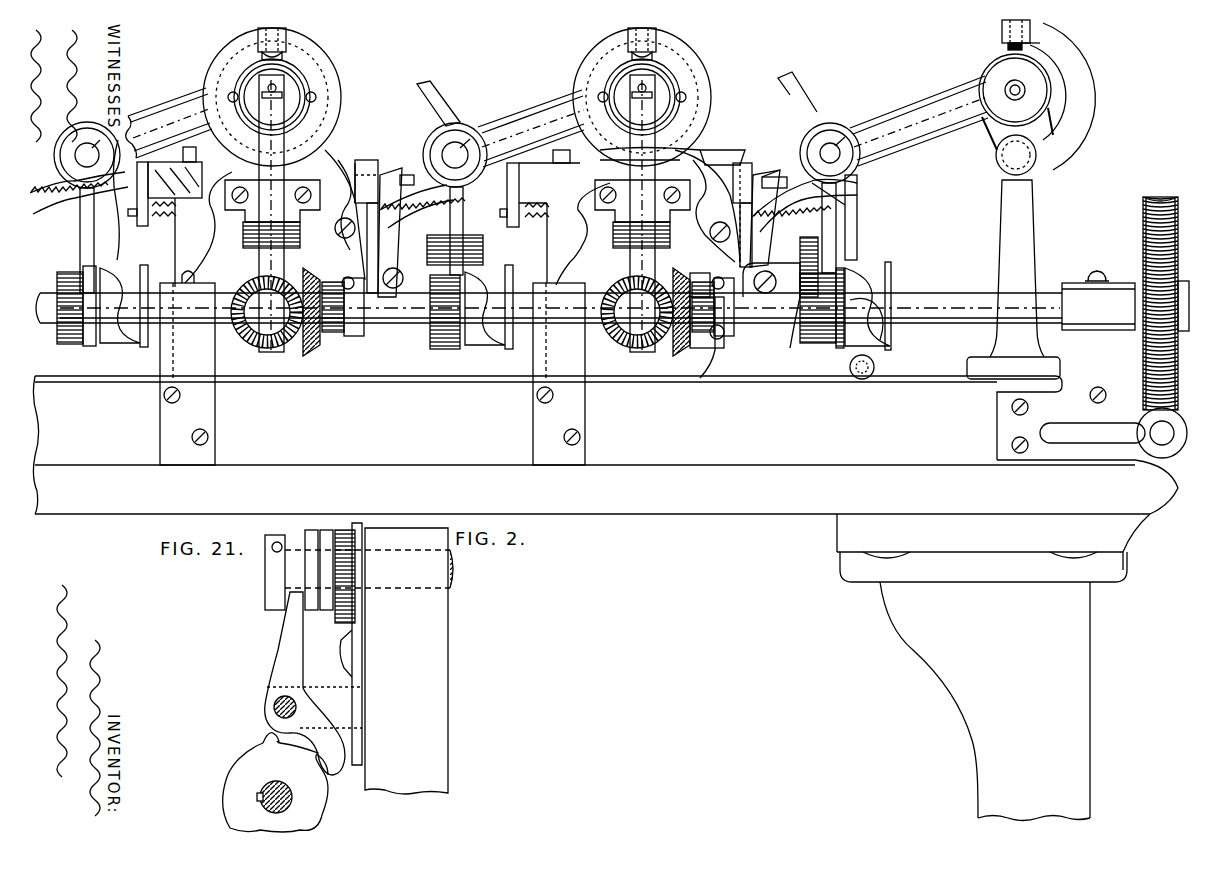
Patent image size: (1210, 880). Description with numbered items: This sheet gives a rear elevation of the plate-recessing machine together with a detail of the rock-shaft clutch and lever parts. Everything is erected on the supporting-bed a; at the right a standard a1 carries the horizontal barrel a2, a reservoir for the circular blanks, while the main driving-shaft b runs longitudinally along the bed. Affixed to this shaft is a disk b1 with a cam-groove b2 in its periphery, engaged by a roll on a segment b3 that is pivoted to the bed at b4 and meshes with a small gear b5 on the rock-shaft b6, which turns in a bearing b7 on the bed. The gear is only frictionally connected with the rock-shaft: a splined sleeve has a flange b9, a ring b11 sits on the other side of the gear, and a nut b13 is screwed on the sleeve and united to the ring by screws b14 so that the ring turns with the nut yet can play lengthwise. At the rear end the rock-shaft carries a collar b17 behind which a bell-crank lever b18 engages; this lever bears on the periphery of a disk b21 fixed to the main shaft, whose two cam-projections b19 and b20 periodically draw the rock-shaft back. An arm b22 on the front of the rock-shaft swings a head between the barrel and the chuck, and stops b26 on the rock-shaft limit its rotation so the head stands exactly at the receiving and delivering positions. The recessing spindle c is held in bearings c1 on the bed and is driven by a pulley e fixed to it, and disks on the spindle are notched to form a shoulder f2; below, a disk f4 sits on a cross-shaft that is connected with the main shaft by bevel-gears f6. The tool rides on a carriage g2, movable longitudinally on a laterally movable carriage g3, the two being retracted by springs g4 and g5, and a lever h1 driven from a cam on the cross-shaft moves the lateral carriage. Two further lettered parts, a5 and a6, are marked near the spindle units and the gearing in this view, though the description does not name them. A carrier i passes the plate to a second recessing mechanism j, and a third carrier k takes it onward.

In FIG. 2, the supporting-bed a is at (1140, 496).
In FIG. 2, the standard a1 is at (1027, 240).
In FIG. 2, the horizontal barrel a2 is at (1021, 98).
In FIG. 2, the bracket a5 is at (600, 105).
In FIG. 2, the bevel gear a6 is at (632, 348).
In FIG. 2, the main driving-shaft b is at (1043, 296).
In FIG. 21, the main driving-shaft b is at (262, 800).
In FIG. 2, the disk b1 is at (880, 305).
In FIG. 2, the cam-groove b2 is at (870, 322).
In FIG. 2, the segment b3 is at (848, 222).
In FIG. 2, the pivot b4 is at (865, 375).
In FIG. 21, the small gear b5 is at (348, 595).
In FIG. 2, the rock-shaft b6 is at (872, 190).
In FIG. 21, the rock-shaft b6 is at (458, 580).
In FIG. 2, the bearing b7 is at (860, 236).
In FIG. 21, the bearing b7 is at (440, 738).
In FIG. 21, the flange b9 is at (360, 545).
In FIG. 21, the ring b11 is at (328, 612).
In FIG. 21, the nut b13 is at (305, 535).
In FIG. 21, the screws b14 is at (275, 594).
In FIG. 2, the collar b17 is at (775, 168).
In FIG. 2, the bell-crank lever b18 is at (845, 205).
In FIG. 21, the bell-crank lever b18 is at (280, 652).
In FIG. 21, the cam-projection b19 is at (330, 790).
In FIG. 21, the cam-projection b20 is at (266, 738).
In FIG. 2, the disk b21 is at (818, 352).
In FIG. 21, the disk b21 is at (235, 785).
In FIG. 2, the arm b22 is at (912, 112).
In FIG. 2, the stops b26 is at (812, 120).
In FIG. 2, the spindle c is at (660, 110).
In FIG. 2, the bearings c1 is at (705, 158).
In FIG. 2, the pulley e is at (700, 70).
In FIG. 2, the shoulder f2 is at (531, 124).
In FIG. 2, the disk f4 is at (660, 290).
In FIG. 2, the bevel-gears f6 is at (676, 348).
In FIG. 2, the carriage g2 is at (700, 128).
In FIG. 2, the carriage g3 is at (307, 194).
In FIG. 2, the spring g4 is at (720, 145).
In FIG. 2, the spring g5 is at (540, 222).
In FIG. 2, the lever h1 is at (750, 337).
In FIG. 2, the carrier i is at (270, 187).
In FIG. 2, the second recessing mechanism j is at (360, 154).
In FIG. 2, the third carrier k is at (167, 112).